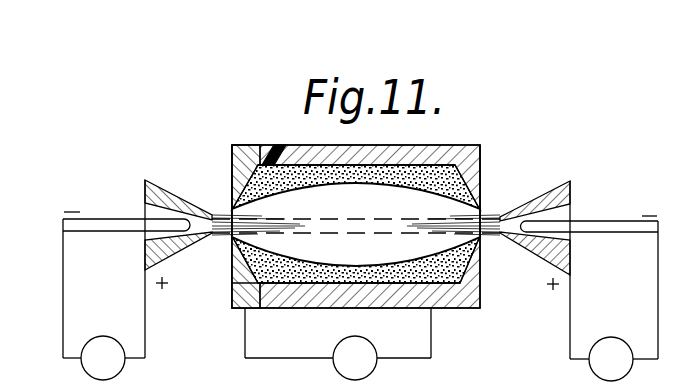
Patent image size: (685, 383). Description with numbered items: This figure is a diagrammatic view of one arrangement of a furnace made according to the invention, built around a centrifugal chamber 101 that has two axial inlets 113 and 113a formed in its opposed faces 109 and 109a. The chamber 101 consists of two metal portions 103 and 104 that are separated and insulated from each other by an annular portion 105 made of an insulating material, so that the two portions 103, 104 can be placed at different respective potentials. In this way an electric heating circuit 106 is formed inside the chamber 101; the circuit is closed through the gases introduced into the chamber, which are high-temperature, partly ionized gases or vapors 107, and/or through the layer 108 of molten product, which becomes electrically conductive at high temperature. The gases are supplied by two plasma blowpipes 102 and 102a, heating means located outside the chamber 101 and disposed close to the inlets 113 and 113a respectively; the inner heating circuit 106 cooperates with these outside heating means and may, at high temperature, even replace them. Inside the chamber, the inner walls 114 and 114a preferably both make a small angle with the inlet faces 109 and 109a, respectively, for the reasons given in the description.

The chamber 101 is at (447, 300).
The plasma blowpipe 102 is at (562, 212).
The plasma blowpipe 102a is at (150, 207).
The metal portion 103 is at (245, 152).
The metal portion 104 is at (387, 157).
The annular insulating piece 105 is at (272, 150).
The electric heating circuit 106 is at (405, 348).
The gases or vapors 107 is at (270, 222).
The molten portion 108 is at (350, 272).
The inlet face 109 is at (480, 163).
The inlet face 109a is at (234, 168).
The axial inlet 113 is at (473, 214).
The axial inlet 113a is at (233, 237).
The inner wall 114 is at (458, 260).
The inner wall 114a is at (230, 270).